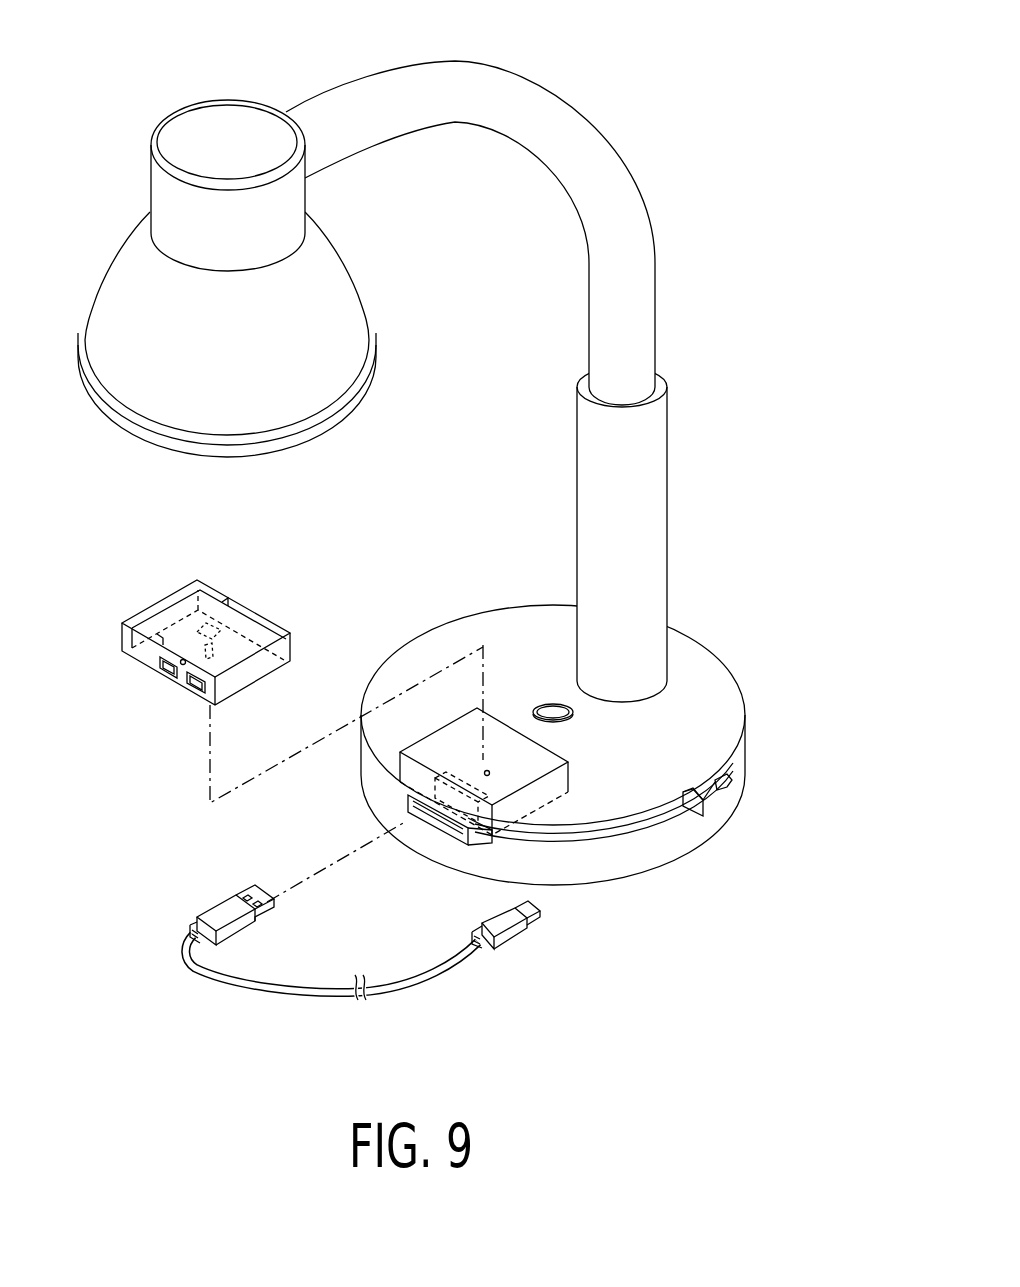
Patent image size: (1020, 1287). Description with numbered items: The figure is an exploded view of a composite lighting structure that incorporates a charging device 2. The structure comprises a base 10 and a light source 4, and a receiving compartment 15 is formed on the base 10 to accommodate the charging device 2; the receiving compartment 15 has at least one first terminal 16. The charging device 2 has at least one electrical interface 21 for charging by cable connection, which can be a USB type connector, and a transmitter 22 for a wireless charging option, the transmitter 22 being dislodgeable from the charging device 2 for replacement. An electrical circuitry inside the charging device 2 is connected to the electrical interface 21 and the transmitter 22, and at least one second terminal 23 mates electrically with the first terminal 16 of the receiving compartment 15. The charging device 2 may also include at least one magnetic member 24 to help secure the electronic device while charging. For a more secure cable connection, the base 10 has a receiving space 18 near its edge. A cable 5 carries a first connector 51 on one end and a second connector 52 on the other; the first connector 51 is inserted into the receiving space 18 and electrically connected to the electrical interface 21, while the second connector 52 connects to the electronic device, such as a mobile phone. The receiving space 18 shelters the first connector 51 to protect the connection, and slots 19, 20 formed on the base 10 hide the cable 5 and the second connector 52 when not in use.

The charging device 2 is at (191, 636).
The light source 4 is at (169, 101).
The cable 5 is at (359, 962).
The base 10 is at (670, 862).
The receiving compartment 15 is at (483, 771).
The first terminal 16 is at (467, 787).
The receiving space 18 is at (440, 817).
The slot 19 is at (596, 840).
The slot 20 is at (712, 792).
The electrical interface 21 is at (168, 667).
The transmitter 22 is at (208, 625).
The second terminal 23 is at (184, 665).
The magnetic member 24 is at (159, 601).
The first connector 51 is at (218, 915).
The second connector 52 is at (515, 942).